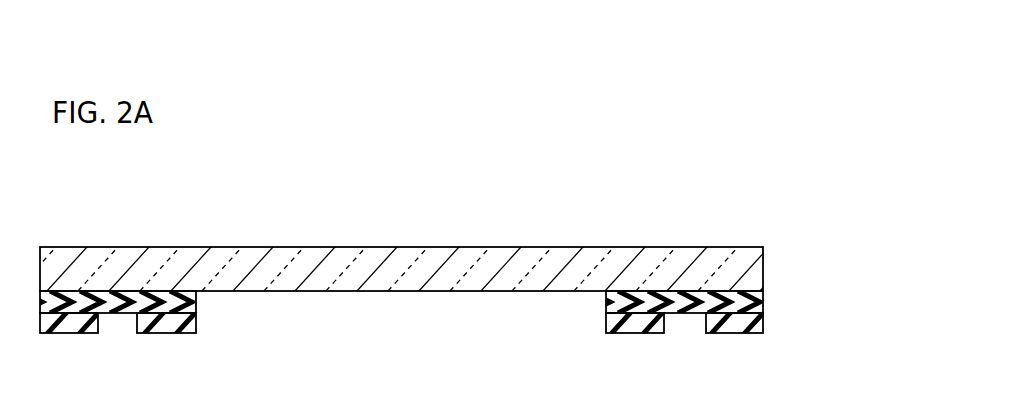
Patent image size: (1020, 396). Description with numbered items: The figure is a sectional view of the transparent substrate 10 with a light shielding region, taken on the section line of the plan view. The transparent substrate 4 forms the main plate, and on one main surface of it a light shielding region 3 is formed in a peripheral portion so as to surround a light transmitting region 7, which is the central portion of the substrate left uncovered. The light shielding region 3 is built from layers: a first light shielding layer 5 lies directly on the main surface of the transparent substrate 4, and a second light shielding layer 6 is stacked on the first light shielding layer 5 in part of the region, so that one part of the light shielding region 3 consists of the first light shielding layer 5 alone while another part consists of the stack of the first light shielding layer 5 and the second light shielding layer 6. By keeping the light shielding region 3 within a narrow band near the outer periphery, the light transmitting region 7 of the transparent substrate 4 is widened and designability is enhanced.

The transparent substrate with a light shielding region 10 is at (697, 213).
The transparent substrate 4 is at (763, 263).
The first light shielding layer 5 is at (763, 300).
The second light shielding layer 6 is at (758, 320).
The light shielding region 3 is at (821, 280).
The light transmitting region 7 is at (605, 341).